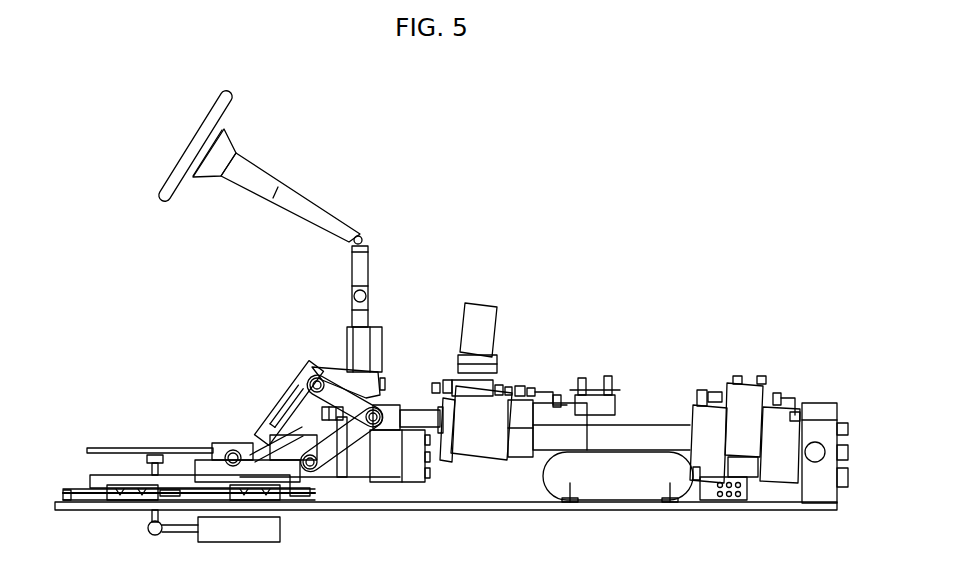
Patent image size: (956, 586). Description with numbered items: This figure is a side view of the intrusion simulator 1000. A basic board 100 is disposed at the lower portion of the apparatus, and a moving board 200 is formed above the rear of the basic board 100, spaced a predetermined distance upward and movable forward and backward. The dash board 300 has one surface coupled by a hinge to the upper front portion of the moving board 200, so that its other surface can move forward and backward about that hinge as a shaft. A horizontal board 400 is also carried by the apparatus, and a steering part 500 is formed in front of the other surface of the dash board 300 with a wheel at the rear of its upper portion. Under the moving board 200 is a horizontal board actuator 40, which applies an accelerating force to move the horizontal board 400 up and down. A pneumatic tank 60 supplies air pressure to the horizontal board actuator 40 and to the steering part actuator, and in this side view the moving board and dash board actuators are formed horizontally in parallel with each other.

The intrusion simulator 1000 is at (647, 182).
The basic board 100 is at (92, 510).
The moving board 200 is at (128, 478).
The dash board 300 is at (268, 410).
The horizontal board 400 is at (105, 452).
The steering part 500 is at (360, 342).
The horizontal board actuator 40 is at (267, 528).
The pneumatic tank 60 is at (633, 482).